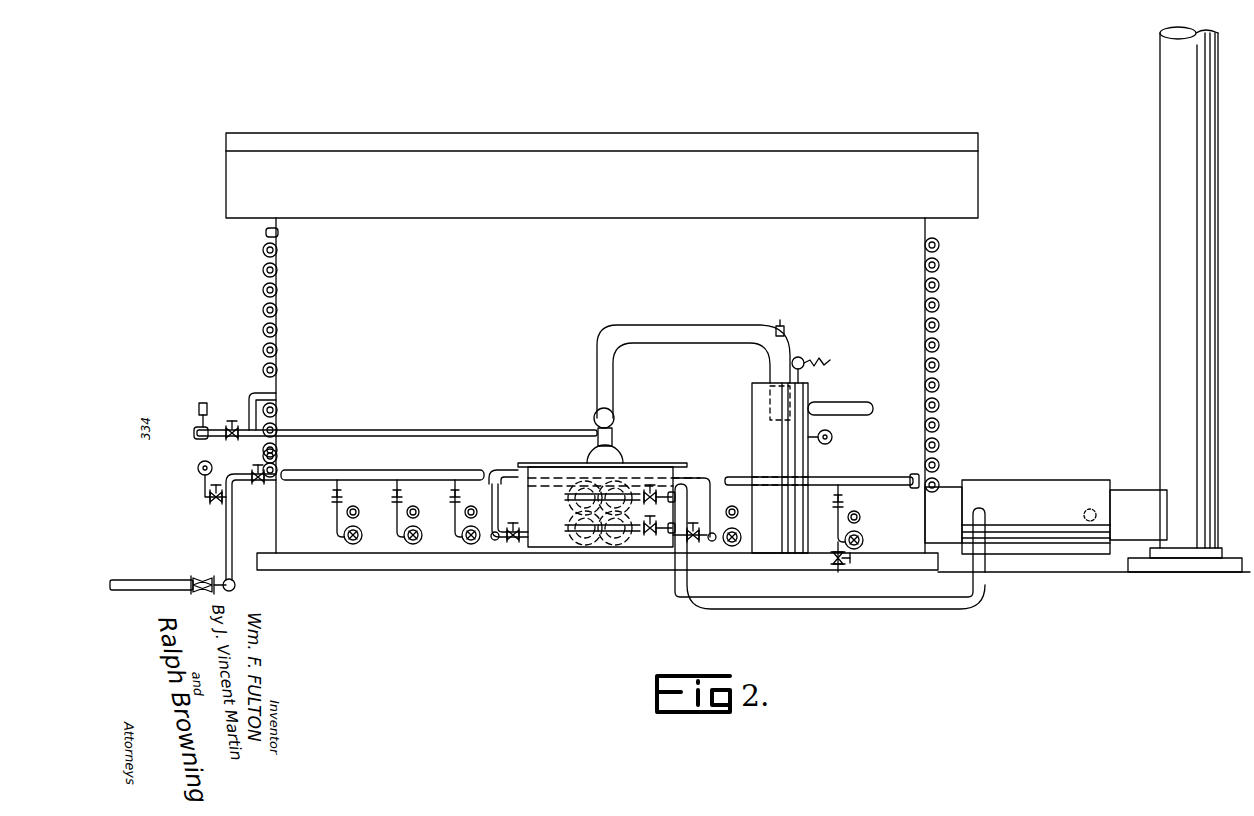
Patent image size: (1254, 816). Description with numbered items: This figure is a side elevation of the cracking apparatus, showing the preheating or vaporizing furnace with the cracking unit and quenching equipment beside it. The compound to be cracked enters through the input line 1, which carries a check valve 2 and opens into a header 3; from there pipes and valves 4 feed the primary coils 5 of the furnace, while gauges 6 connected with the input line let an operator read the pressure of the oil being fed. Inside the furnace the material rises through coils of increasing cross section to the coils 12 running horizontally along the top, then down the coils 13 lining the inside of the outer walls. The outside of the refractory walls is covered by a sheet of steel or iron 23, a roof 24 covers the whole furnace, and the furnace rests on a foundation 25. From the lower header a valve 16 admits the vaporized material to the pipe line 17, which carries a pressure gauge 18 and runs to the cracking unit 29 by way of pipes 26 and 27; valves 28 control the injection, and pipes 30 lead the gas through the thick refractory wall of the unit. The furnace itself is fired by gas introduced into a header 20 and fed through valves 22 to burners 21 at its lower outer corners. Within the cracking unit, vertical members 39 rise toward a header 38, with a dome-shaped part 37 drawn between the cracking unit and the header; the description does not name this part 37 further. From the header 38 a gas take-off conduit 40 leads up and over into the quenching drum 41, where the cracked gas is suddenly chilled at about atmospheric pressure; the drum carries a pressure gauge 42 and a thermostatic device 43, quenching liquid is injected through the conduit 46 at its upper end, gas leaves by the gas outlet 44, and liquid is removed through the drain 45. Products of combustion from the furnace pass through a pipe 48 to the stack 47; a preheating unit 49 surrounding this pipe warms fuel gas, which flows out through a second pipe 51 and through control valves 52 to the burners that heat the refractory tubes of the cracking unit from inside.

The input line 1 is at (140, 578).
The check valve 2 is at (205, 578).
The header 3 is at (236, 585).
The valves 4 is at (258, 486).
The primary coils 5 is at (265, 457).
The gauges 6 is at (198, 470).
The coils 12 is at (264, 233).
The coils 13 is at (262, 254).
The valve 16 is at (232, 421).
The pipe line 17 is at (358, 432).
The pressure gauge 18 is at (203, 403).
The header 20 is at (412, 471).
The burners 21 is at (414, 543).
The valves 22 is at (392, 503).
The sheet of steel or iron 23 is at (895, 290).
The roof 24 is at (628, 205).
The foundation 25 is at (572, 560).
The pipe 26 is at (502, 470).
The pipe 27 is at (500, 508).
The valves 28 is at (500, 542).
The cracking unit 29 is at (660, 478).
The pipes 30 is at (517, 545).
The dome 37 is at (620, 452).
The header 38 is at (610, 412).
The members 39 is at (612, 432).
The gas take-off conduit 40 is at (680, 333).
The quenching drum 41 is at (752, 440).
The pressure gauge 42 is at (832, 437).
The thermostatic device 43 is at (802, 358).
The gas outlet 44 is at (835, 405).
The liquid drain 45 is at (838, 566).
The conduit 46 is at (783, 328).
The stack 47 is at (1165, 298).
The pipe 48 is at (1128, 492).
The preheating unit 49 is at (1020, 483).
The second pipe 51 is at (972, 610).
The control valves 52 is at (660, 540).